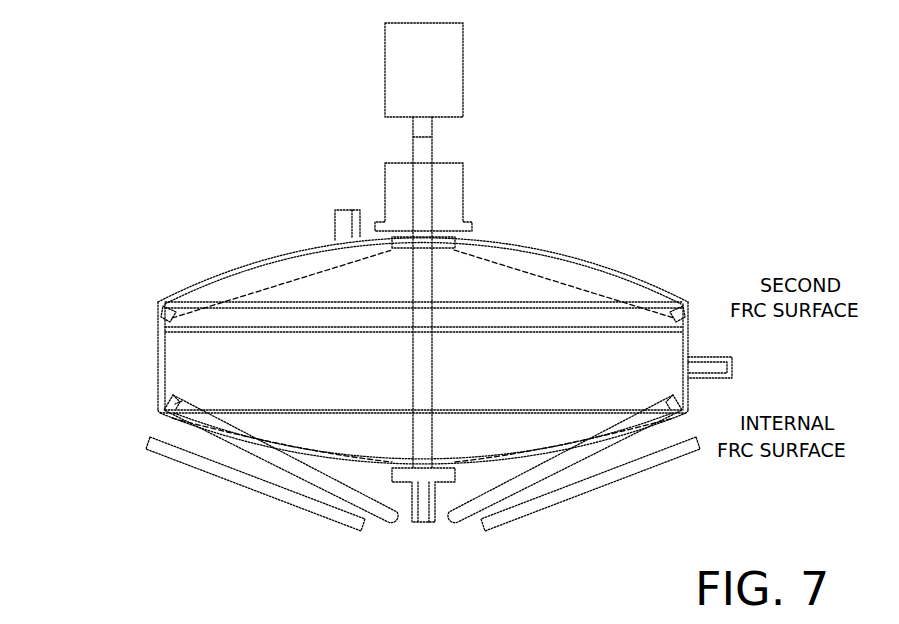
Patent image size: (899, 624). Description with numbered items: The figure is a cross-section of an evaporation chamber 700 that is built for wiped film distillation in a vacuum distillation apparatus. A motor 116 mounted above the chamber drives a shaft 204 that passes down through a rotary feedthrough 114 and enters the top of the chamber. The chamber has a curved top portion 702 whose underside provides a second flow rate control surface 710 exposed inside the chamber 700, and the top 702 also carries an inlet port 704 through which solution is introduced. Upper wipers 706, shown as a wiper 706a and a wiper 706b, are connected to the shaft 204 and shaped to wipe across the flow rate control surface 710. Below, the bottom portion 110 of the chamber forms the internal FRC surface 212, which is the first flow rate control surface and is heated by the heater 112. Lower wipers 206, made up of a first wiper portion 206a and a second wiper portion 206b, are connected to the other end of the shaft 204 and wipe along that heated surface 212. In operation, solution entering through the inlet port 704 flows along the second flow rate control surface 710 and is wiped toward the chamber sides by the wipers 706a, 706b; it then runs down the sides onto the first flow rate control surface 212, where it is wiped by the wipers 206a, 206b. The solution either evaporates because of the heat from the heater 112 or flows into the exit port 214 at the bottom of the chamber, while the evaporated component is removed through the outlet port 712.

The motor 116 is at (385, 52).
The rotary feedthrough 114 is at (385, 180).
The shaft 204 is at (420, 378).
The curved top portion 702 is at (210, 275).
The inlet port 704 is at (340, 222).
The wipers 706 is at (423, 255).
The wiper 706a is at (343, 250).
The wiper 706b is at (500, 253).
The evaporation chamber 700 is at (102, 338).
The second flow rate control surface 710 is at (625, 282).
The outlet port 712 is at (733, 365).
The internal FRC surface 212 is at (628, 428).
The wipers 206 is at (423, 408).
The first wiper portion 206a is at (320, 458).
The second wiper portion 206b is at (523, 458).
The bottom portion 110 is at (173, 418).
The heater 112 is at (635, 470).
The exit port 214 is at (418, 535).